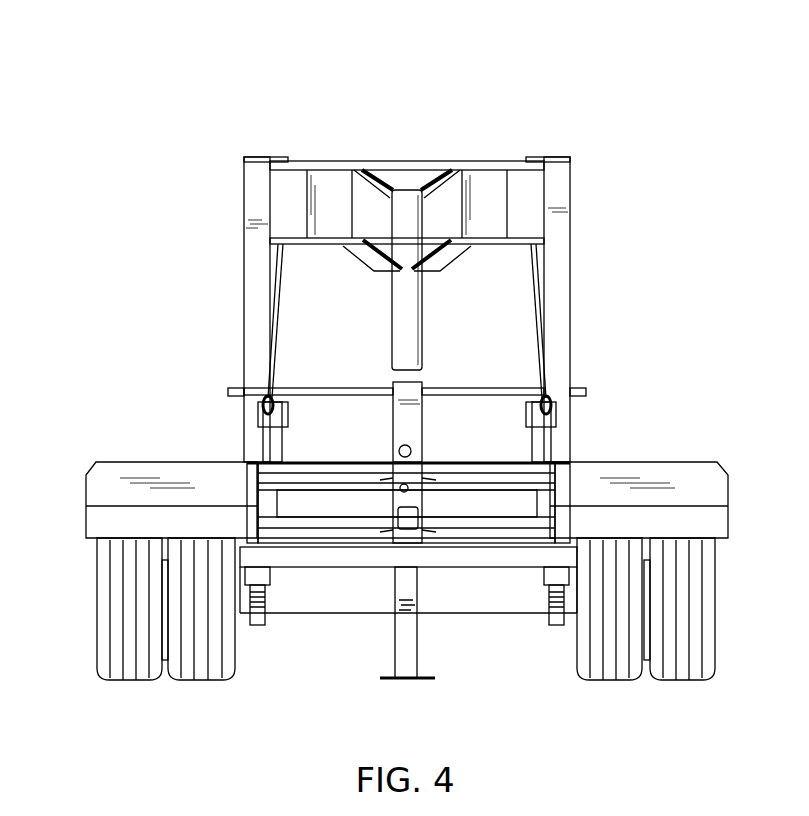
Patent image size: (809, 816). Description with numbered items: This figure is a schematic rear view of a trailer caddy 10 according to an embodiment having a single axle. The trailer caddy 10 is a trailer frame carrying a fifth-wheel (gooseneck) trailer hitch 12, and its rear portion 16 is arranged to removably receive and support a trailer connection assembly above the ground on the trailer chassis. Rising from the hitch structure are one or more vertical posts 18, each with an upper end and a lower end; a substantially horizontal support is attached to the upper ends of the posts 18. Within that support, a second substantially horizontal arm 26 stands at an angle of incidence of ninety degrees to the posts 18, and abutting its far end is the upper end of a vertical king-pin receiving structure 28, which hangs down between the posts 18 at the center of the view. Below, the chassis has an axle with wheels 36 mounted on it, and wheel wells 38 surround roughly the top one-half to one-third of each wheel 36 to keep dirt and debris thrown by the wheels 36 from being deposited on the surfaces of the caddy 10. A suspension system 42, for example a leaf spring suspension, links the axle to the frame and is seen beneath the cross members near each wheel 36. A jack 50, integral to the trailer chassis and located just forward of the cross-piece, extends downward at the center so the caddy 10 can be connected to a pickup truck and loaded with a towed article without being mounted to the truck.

The trailer caddy 10 is at (782, 58).
The fifth-wheel trailer hitch 12 is at (562, 112).
The rear portion 16 is at (703, 408).
The vertical posts 18 is at (243, 322).
The second substantially horizontal arm 26 is at (368, 274).
The vertical king-pin receiving structure 28 is at (422, 346).
The wheels 36 is at (97, 618).
The wheel wells 38 is at (96, 462).
The suspension system 42 is at (556, 628).
The jack 50 is at (418, 636).